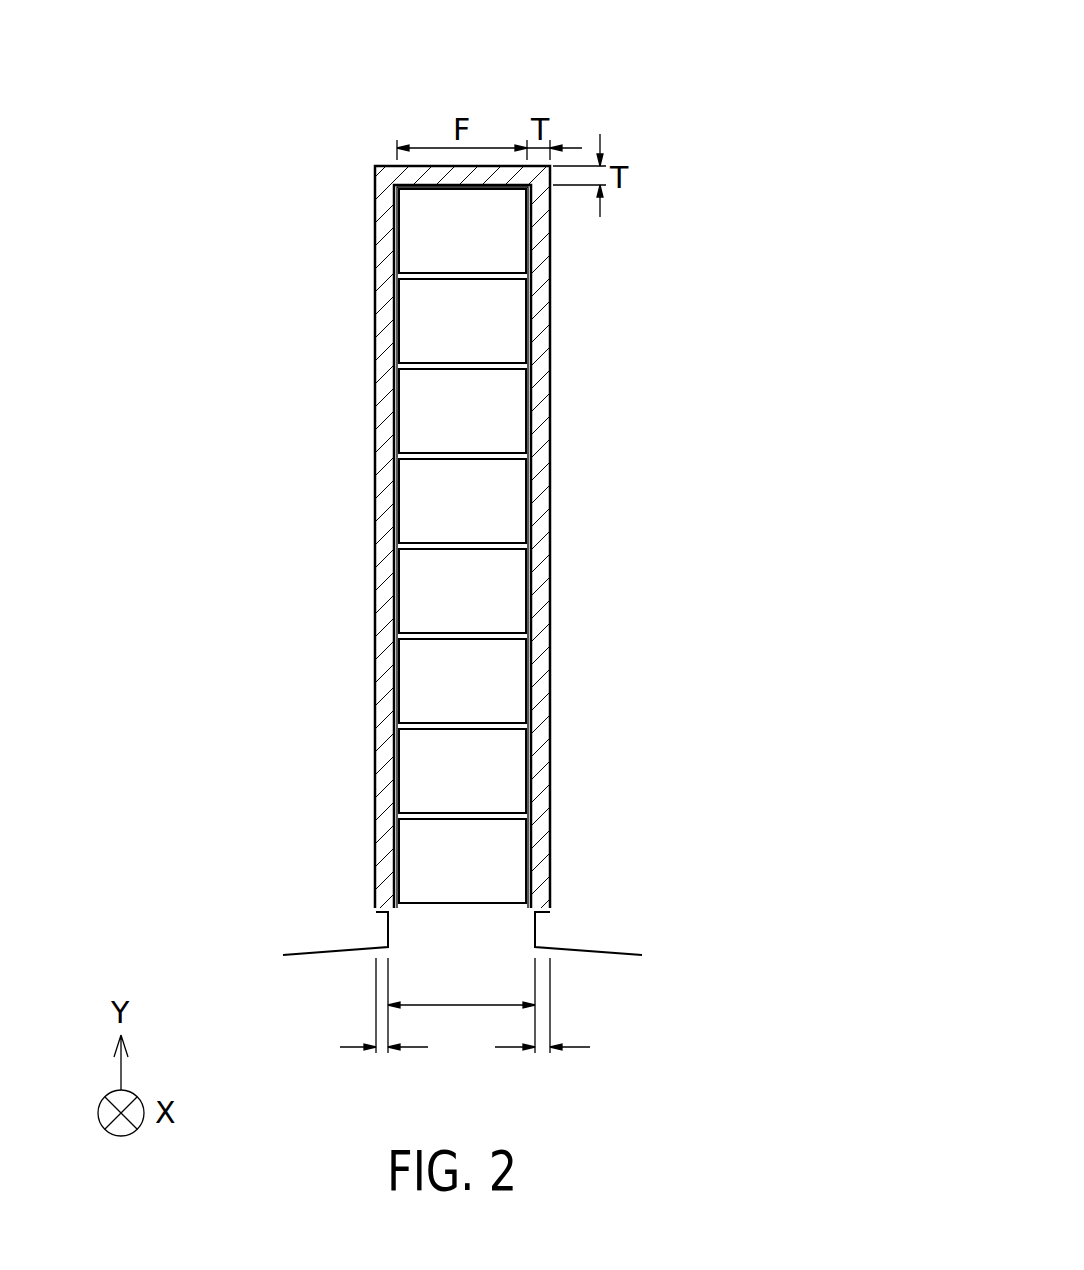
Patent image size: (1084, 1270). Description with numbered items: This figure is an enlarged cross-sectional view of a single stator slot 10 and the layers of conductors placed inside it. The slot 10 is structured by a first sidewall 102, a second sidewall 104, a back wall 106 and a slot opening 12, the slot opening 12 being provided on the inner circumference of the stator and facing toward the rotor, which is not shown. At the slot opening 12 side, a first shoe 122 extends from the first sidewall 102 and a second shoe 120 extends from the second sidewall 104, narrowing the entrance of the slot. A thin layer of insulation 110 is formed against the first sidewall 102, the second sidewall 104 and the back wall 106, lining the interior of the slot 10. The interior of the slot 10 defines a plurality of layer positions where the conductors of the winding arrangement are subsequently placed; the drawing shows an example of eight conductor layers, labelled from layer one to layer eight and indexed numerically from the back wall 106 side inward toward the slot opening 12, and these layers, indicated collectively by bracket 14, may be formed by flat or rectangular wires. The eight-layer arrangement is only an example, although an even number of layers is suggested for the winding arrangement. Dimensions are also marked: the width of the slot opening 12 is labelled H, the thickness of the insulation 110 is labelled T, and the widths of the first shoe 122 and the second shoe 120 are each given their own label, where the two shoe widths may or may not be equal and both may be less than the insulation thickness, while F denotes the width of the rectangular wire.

The slot 10 is at (645, 68).
The slot opening 12 is at (449, 925).
The lens assembly 14 is at (197, 187).
The first sidewall 102 is at (375, 488).
The second sidewall 104 is at (550, 473).
The back wall 106 is at (375, 185).
The insulation 110 is at (538, 658).
The second shoe 120 is at (543, 916).
The first shoe 122 is at (380, 916).